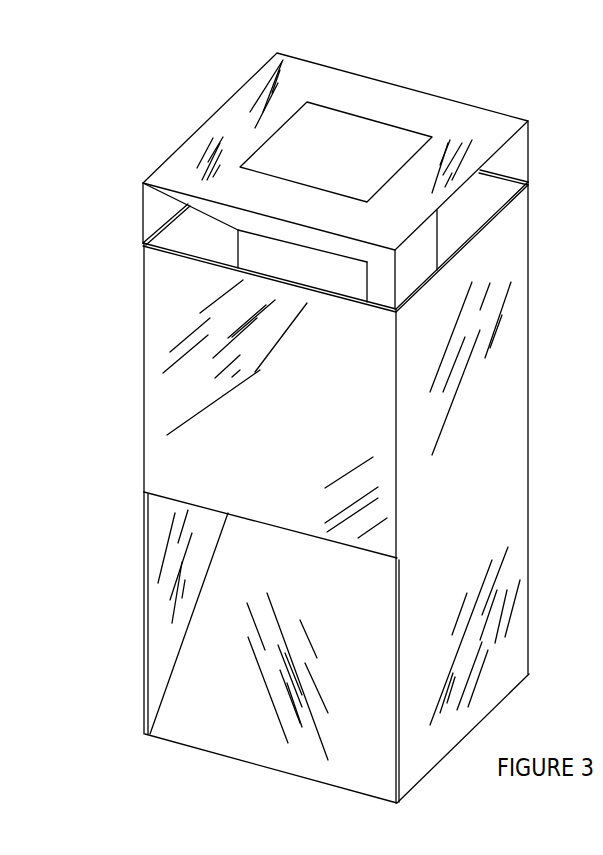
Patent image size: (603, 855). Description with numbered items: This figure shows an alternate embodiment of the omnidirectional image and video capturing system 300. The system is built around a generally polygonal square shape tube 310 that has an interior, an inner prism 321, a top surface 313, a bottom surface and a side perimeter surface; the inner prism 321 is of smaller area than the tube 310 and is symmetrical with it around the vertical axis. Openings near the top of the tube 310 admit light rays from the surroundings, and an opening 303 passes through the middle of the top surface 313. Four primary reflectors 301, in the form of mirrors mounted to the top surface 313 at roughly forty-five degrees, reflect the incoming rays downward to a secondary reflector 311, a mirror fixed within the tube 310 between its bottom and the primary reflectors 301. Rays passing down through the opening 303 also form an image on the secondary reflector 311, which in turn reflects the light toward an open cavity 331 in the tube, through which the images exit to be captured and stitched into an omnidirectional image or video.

The capturing system 300 is at (141, 80).
The primary reflectors 301 is at (440, 212).
The opening 303 is at (378, 122).
The tube 310 is at (493, 432).
The secondary reflector 311 is at (222, 733).
The top surface 313 is at (440, 113).
The inner prism 321 is at (267, 257).
The open cavity 331 is at (160, 640).